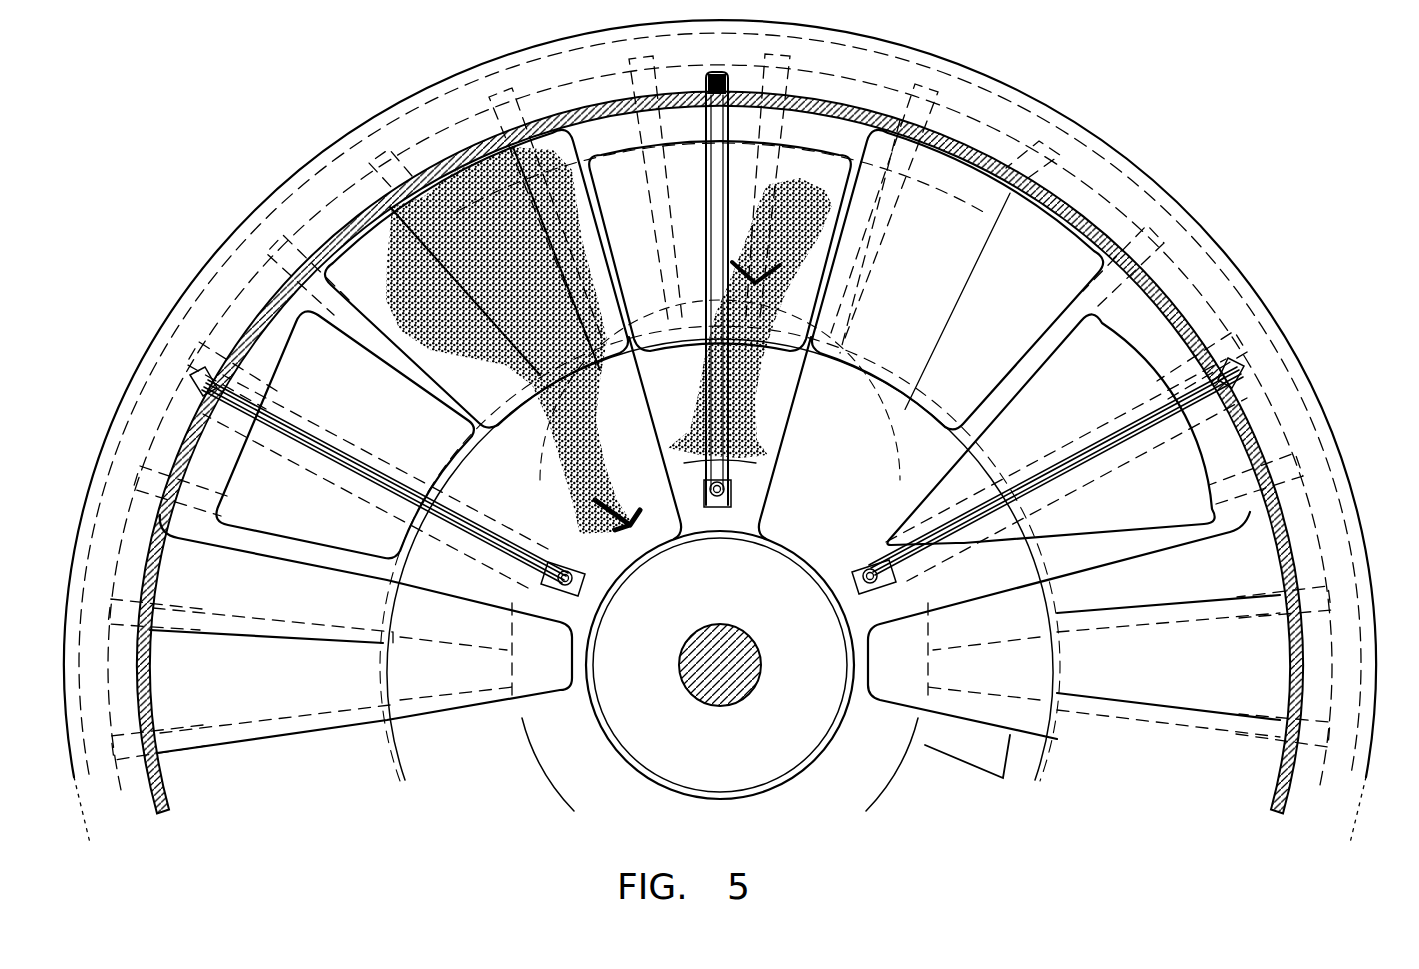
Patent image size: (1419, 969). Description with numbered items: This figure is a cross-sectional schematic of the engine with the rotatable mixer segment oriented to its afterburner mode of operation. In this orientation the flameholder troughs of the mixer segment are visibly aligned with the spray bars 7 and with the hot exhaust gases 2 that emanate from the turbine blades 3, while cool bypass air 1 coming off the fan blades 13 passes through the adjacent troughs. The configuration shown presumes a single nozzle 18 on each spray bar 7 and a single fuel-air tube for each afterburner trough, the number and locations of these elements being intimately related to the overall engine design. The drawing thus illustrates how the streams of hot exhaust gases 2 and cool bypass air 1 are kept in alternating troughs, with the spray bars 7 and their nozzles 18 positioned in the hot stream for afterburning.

The cool bypass air 1 is at (638, 508).
The hot exhaust gases 2 is at (762, 283).
The turbine blades 3 is at (963, 460).
The spray bar 7 is at (717, 72).
The fan blades 13 is at (1010, 186).
The nozzle 18 is at (714, 499).